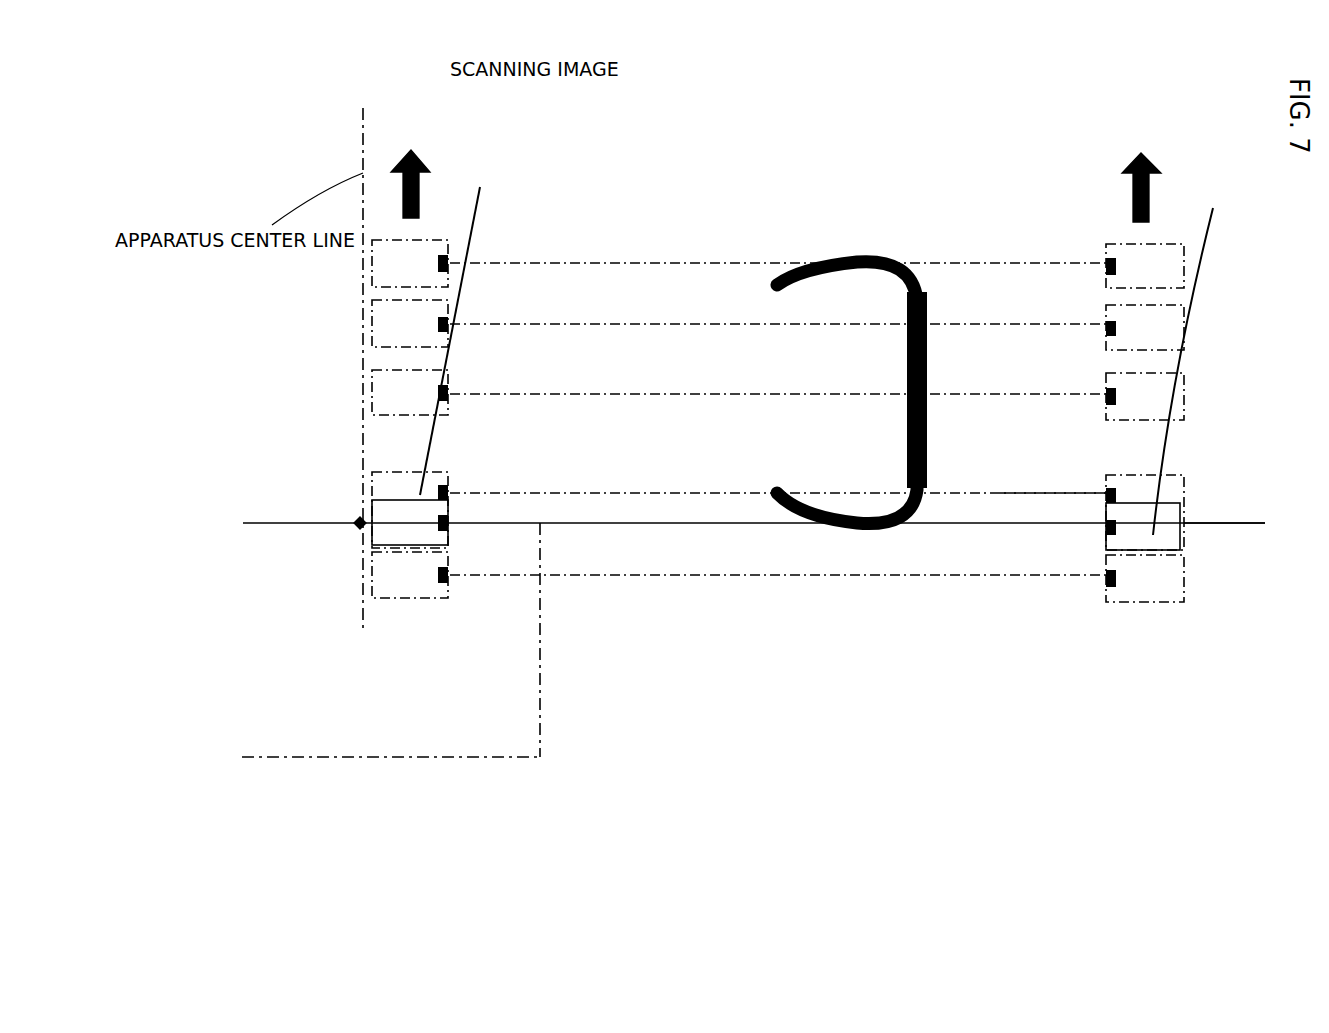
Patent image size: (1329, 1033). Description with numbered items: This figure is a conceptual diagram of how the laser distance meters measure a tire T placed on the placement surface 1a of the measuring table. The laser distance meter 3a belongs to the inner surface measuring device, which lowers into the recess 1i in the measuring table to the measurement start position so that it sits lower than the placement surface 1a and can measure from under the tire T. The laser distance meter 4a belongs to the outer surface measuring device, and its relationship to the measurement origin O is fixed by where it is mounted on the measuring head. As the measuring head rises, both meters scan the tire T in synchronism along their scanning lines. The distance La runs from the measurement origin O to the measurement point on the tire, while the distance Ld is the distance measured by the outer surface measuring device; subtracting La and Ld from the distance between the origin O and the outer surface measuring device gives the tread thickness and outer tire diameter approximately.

The laser distance meter 3a is at (469, 318).
The laser distance meter 4a is at (1192, 352).
The placement surface 1a is at (1218, 527).
The recess 1i is at (543, 687).
The measurement origin O is at (353, 527).
The tire T is at (908, 503).
The distance La is at (618, 493).
The distance Ld is at (1000, 493).